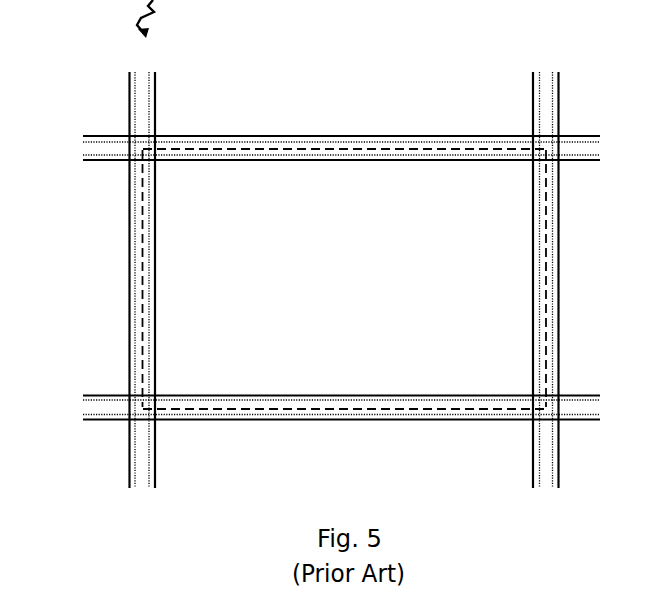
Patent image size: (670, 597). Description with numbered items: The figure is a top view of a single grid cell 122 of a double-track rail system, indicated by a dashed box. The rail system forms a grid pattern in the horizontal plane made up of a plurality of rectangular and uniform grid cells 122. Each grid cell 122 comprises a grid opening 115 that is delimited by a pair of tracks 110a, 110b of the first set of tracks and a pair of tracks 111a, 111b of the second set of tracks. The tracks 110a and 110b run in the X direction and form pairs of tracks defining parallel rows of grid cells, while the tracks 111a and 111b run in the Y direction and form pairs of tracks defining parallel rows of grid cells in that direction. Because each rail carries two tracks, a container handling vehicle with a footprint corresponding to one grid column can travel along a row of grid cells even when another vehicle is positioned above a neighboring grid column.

The track of the first set of tracks 110a is at (363, 136).
The track of the first set of tracks 110b is at (108, 396).
The track of the second set of tracks 111a is at (155, 101).
The track of the second set of tracks 111b is at (559, 303).
The grid opening 115 is at (366, 289).
The grid cell 122 is at (302, 148).